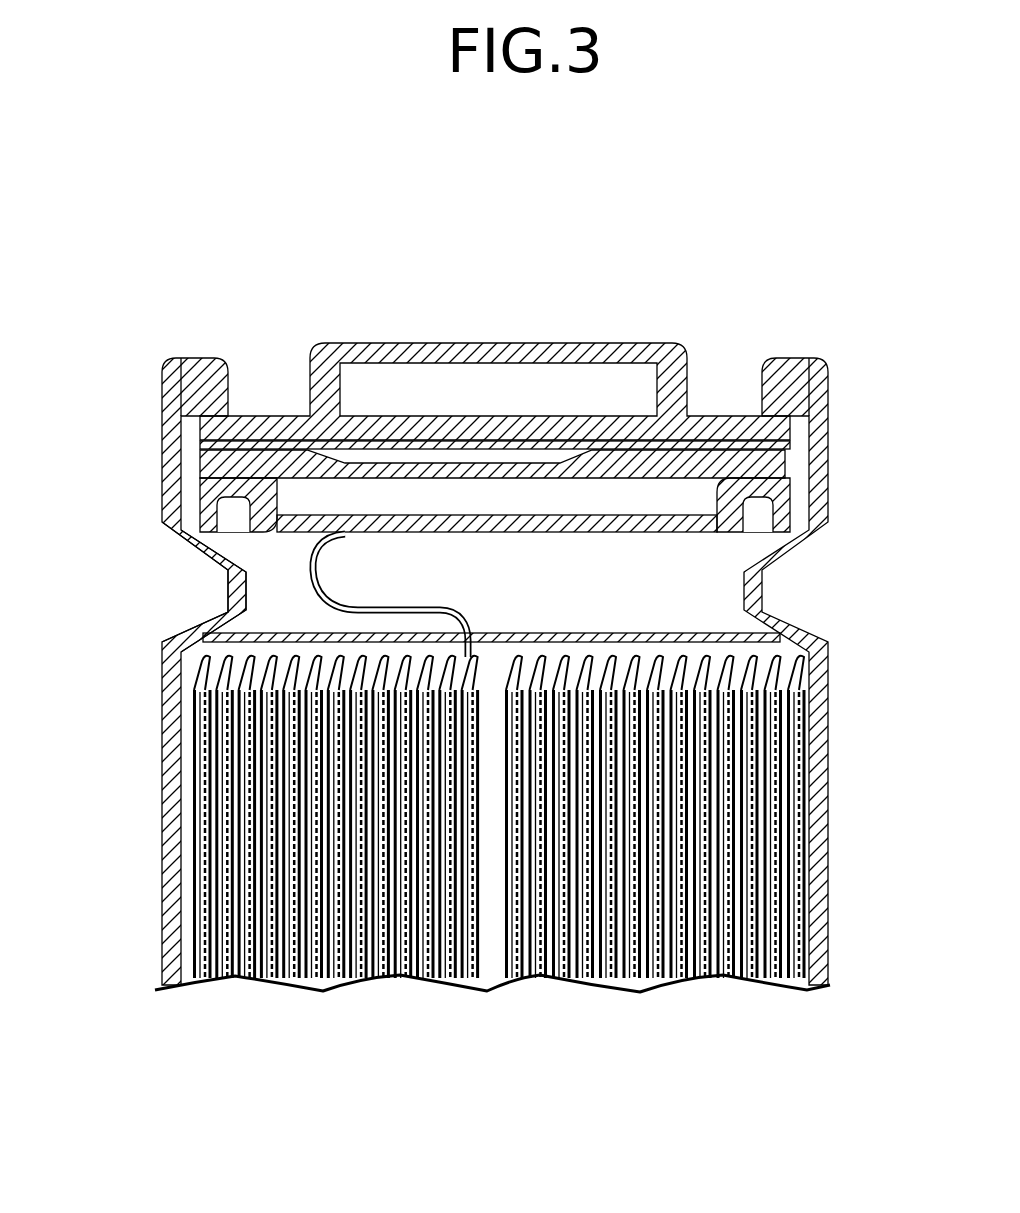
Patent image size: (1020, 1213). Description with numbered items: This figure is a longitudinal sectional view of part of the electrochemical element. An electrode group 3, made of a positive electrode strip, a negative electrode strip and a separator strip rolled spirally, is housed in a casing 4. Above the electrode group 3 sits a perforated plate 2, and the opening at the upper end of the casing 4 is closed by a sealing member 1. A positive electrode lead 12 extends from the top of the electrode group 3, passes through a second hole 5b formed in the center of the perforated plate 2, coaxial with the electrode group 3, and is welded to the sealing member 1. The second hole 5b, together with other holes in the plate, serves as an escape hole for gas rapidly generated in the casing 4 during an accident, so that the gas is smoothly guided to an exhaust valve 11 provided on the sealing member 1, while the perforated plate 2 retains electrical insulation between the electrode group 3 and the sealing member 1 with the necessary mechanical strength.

The sealing member 1 is at (495, 352).
The perforated plate 2 is at (700, 612).
The electrode group 3 is at (318, 893).
The casing 4 is at (188, 628).
The second hole 5b is at (514, 633).
The exhaust valve 11 is at (583, 441).
The positive electrode lead 12 is at (312, 563).